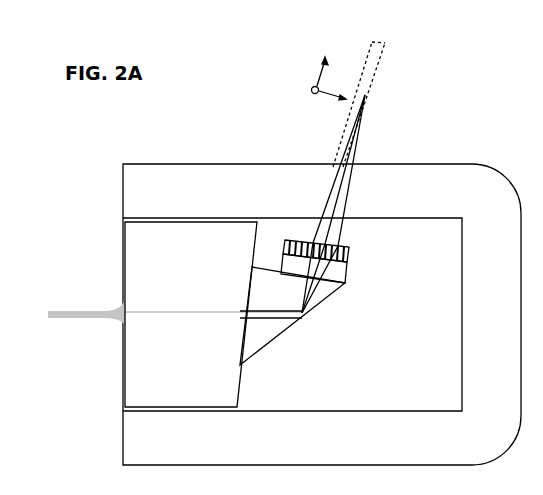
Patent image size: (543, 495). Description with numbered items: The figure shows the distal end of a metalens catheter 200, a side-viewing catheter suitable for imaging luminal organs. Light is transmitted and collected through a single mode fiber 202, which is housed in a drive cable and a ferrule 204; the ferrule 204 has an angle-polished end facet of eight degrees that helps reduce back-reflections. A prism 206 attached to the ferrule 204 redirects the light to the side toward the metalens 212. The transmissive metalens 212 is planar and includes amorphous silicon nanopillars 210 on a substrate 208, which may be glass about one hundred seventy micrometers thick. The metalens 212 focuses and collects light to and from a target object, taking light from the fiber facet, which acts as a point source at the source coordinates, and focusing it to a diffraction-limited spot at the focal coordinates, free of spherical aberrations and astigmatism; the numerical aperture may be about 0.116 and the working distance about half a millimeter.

The metalens catheter 200 is at (234, 136).
The single mode fiber 202 is at (78, 308).
The ferrule 204 is at (125, 372).
The prism 206 is at (323, 313).
The substrate 208 is at (357, 283).
The amorphous silicon nanopillars 210 is at (313, 240).
The metalens 212 is at (347, 247).